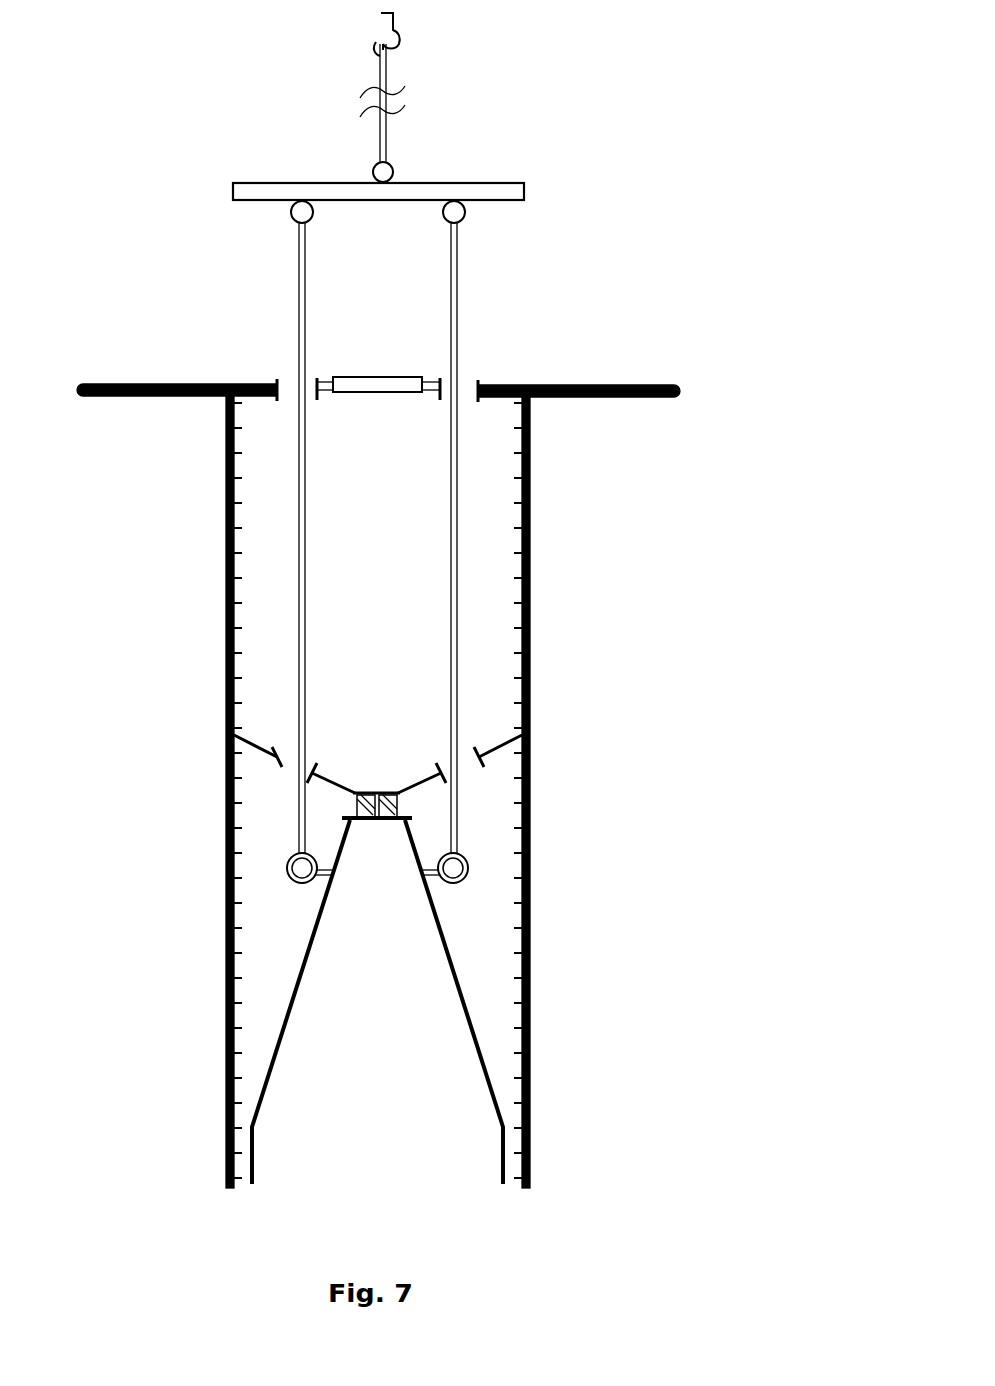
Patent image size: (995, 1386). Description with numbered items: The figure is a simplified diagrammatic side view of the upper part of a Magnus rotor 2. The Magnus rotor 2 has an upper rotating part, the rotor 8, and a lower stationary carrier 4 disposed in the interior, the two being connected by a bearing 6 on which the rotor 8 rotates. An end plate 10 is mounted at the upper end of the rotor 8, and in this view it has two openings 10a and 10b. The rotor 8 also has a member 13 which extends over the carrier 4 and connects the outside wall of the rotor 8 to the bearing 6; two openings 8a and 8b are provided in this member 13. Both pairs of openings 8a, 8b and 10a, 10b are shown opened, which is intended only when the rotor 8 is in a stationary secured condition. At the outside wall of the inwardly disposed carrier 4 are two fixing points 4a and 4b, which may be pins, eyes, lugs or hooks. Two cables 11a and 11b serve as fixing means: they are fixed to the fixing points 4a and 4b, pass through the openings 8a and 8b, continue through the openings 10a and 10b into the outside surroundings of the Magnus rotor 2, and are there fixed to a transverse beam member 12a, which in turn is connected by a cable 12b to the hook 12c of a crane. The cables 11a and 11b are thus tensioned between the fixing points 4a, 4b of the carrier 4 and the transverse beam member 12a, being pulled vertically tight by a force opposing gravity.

The Magnus rotor 2 is at (132, 630).
The carrier 4 is at (384, 1030).
The fixing point 4a is at (297, 882).
The fixing point 4b is at (465, 880).
The bearing 6 is at (375, 790).
The rotor 8 is at (530, 552).
The opening 8a is at (292, 765).
The opening 8b is at (465, 762).
The end plate 10 is at (411, 406).
The opening 10a is at (290, 387).
The opening 10b is at (465, 387).
The cable 11a is at (300, 262).
The cable 11b is at (457, 262).
The transverse beam member 12a is at (490, 190).
The cable 12b is at (388, 143).
The hook 12c is at (396, 42).
The member 13 is at (263, 746).